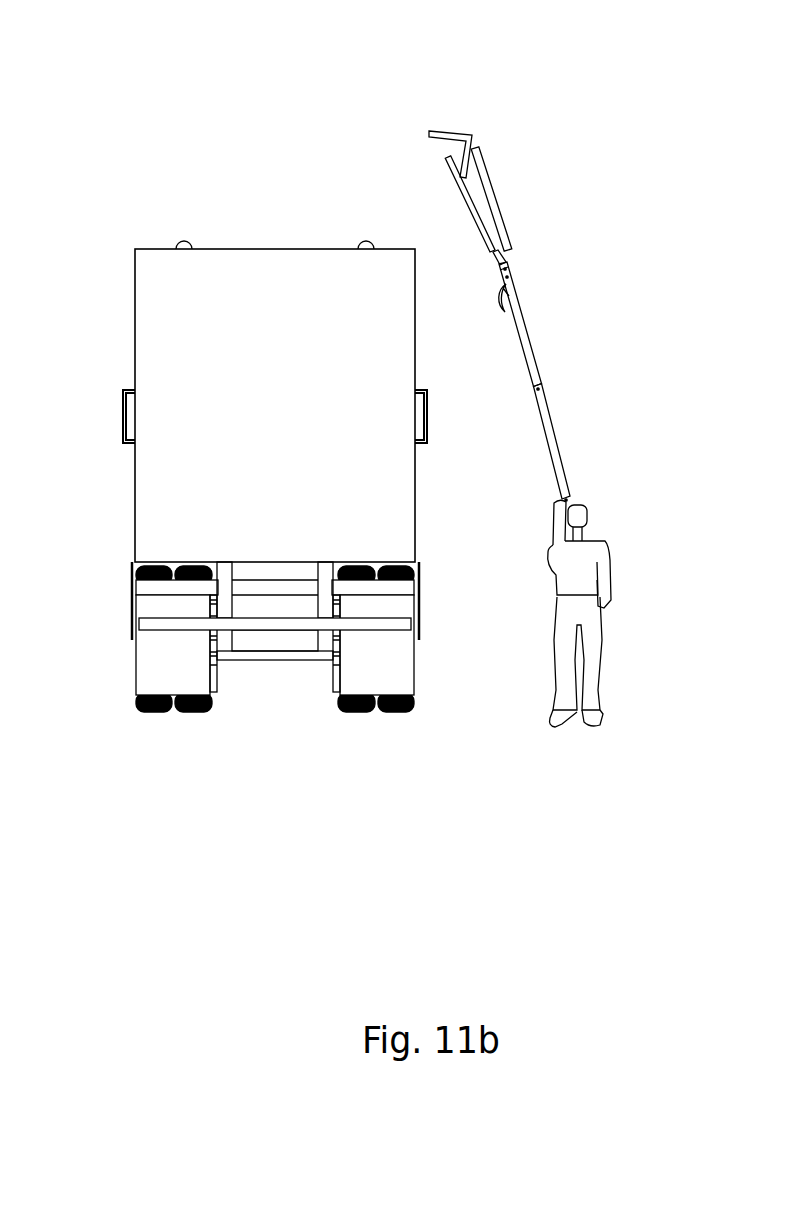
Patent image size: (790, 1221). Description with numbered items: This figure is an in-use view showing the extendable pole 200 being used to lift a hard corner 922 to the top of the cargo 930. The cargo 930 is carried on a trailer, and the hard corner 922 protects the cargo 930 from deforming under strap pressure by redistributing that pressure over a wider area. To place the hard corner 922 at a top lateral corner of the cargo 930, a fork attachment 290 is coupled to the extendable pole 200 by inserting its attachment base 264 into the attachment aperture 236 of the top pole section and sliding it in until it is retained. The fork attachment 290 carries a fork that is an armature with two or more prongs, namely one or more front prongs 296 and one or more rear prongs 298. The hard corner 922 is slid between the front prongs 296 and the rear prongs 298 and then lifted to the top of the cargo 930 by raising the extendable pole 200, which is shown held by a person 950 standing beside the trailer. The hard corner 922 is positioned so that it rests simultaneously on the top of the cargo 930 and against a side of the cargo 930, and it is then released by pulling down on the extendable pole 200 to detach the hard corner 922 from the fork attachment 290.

The cargo 930 is at (128, 203).
The fork attachment 290 is at (528, 220).
The hard corner 922 is at (447, 132).
The rear prong 298 is at (480, 173).
The front prong 296 is at (463, 193).
The attachment base 264 is at (510, 268).
The attachment aperture 236 is at (512, 277).
The extendable pole 200 is at (548, 415).
The operator 950 is at (602, 582).